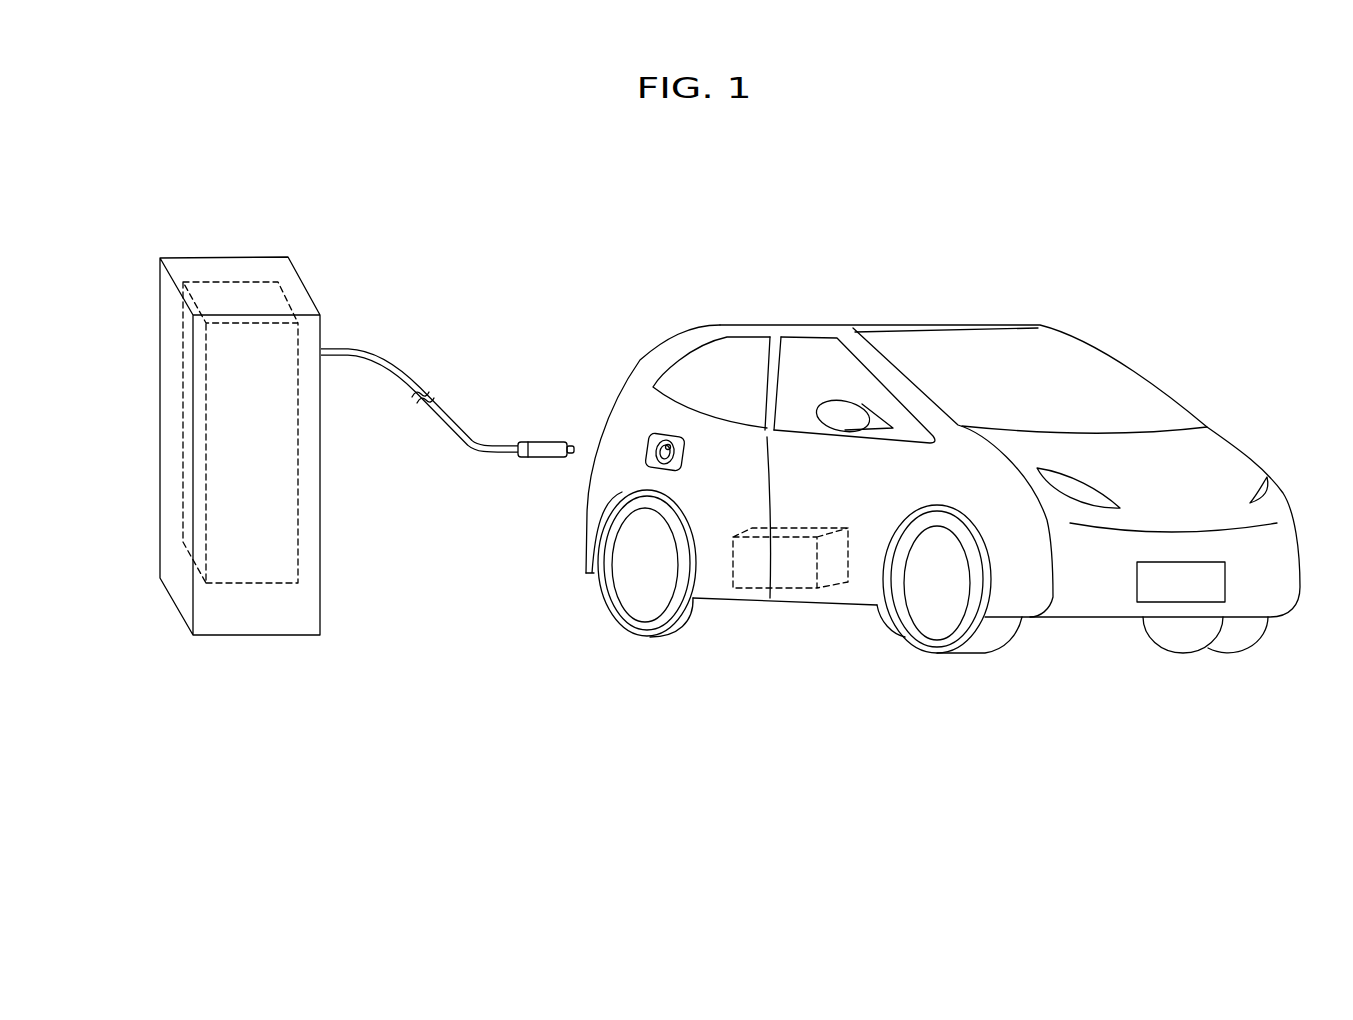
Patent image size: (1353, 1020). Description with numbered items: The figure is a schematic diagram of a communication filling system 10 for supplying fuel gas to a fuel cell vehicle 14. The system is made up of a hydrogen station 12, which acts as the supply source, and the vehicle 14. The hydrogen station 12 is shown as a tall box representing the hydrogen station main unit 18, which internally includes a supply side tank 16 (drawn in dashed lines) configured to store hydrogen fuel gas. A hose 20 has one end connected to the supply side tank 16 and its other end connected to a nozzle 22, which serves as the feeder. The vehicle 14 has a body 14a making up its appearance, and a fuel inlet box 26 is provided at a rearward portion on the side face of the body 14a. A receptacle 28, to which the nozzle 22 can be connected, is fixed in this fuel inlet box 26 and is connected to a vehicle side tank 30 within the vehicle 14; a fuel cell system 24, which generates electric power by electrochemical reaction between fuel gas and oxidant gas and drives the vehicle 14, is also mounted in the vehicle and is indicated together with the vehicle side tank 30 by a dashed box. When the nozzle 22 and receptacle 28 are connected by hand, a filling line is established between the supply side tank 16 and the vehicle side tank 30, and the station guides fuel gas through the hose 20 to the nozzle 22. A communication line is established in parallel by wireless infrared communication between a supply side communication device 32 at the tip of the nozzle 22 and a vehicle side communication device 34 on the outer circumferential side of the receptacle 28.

The communication filling system 10 is at (808, 149).
The hydrogen station 12 is at (146, 259).
The fuel cell vehicle 14 is at (824, 311).
The body 14a is at (643, 412).
The supply side tank 16 is at (262, 282).
The hydrogen station main unit 18 is at (322, 533).
The hose 20 is at (443, 428).
The nozzle 22 is at (537, 441).
The fuel cell system 24 is at (790, 558).
The fuel inlet box 26 is at (644, 435).
The receptacle 28 is at (673, 455).
The vehicle side tank 30 is at (788, 590).
The supply side communication device 32 is at (572, 459).
The vehicle side communication device 34 is at (672, 446).